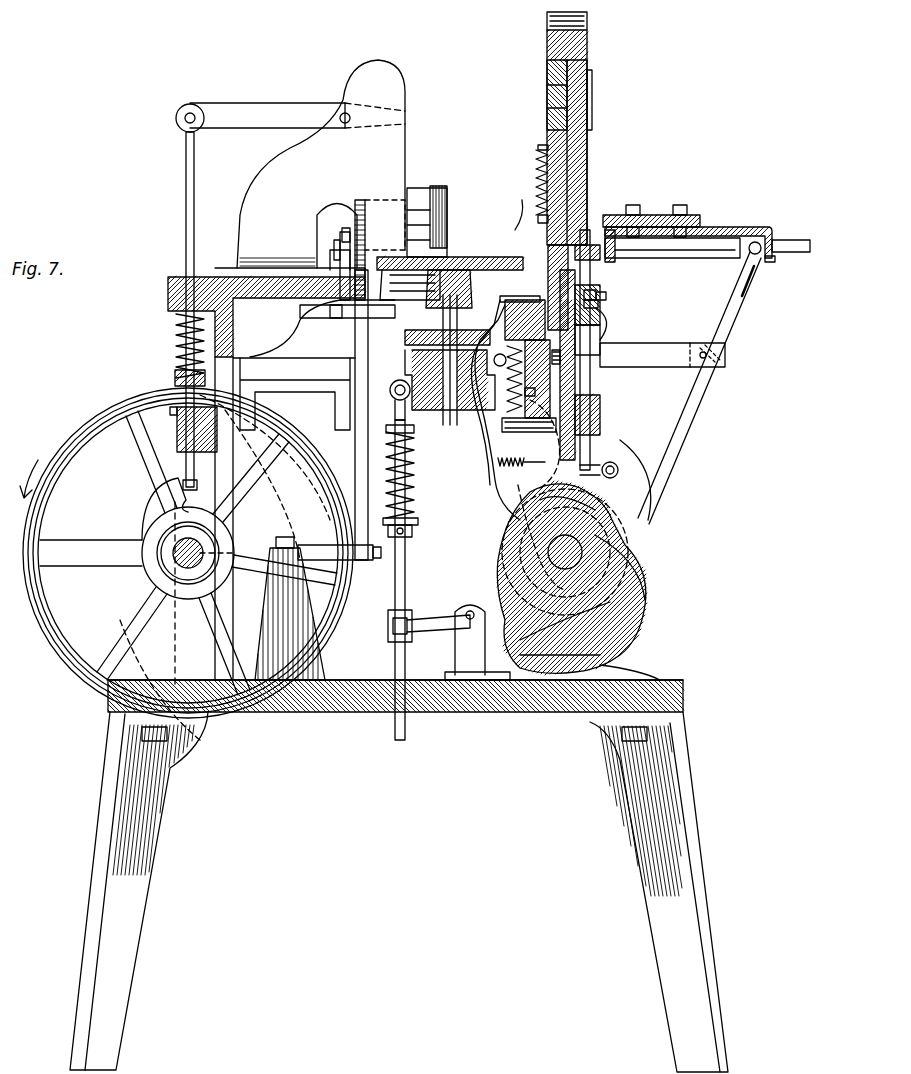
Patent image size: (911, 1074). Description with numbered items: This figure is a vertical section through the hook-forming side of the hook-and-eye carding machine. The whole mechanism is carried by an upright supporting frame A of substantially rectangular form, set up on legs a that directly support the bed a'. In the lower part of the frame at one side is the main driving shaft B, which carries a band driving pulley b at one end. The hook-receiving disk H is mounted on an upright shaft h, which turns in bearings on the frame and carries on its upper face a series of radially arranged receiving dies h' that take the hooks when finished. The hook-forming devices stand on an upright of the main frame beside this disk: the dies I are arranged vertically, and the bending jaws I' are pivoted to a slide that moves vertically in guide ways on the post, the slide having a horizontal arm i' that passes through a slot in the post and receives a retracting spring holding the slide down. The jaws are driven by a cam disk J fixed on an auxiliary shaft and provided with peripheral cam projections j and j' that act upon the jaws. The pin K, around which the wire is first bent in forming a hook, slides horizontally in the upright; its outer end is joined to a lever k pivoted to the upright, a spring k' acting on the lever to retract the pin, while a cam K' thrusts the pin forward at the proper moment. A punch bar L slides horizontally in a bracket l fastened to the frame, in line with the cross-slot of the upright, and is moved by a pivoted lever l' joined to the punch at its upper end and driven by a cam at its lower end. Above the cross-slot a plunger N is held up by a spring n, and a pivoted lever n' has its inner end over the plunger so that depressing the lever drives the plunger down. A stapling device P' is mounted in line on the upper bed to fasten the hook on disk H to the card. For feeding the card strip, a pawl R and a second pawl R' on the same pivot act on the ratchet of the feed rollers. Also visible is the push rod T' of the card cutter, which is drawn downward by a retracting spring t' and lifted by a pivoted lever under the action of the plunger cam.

The upright supporting frame A is at (396, 718).
The legs a is at (399, 892).
The bed a' is at (395, 692).
The shaft B is at (180, 560).
The band driving pulley b is at (42, 520).
The stapling device P' is at (287, 275).
The pawl R is at (385, 225).
The second pawl R' is at (322, 250).
The disk H is at (460, 257).
The upright shaft h is at (420, 408).
The dies h' is at (443, 265).
The plunger N is at (545, 183).
The spring n is at (527, 184).
The pivoted lever n' is at (551, 152).
The lever k is at (555, 227).
The spring k' is at (500, 410).
The pin K is at (580, 355).
The cam K' is at (502, 495).
The dies I is at (707, 215).
The bending jaws I' is at (651, 371).
The arm i' is at (528, 379).
The bracket l is at (667, 217).
The punch bar L is at (722, 262).
The pivoted lever l' is at (699, 383).
The cam disk J is at (572, 578).
The peripheral cam projection j is at (610, 518).
The peripheral cam projection j' is at (602, 622).
The push rod T' is at (411, 580).
The retracting spring t' is at (413, 471).